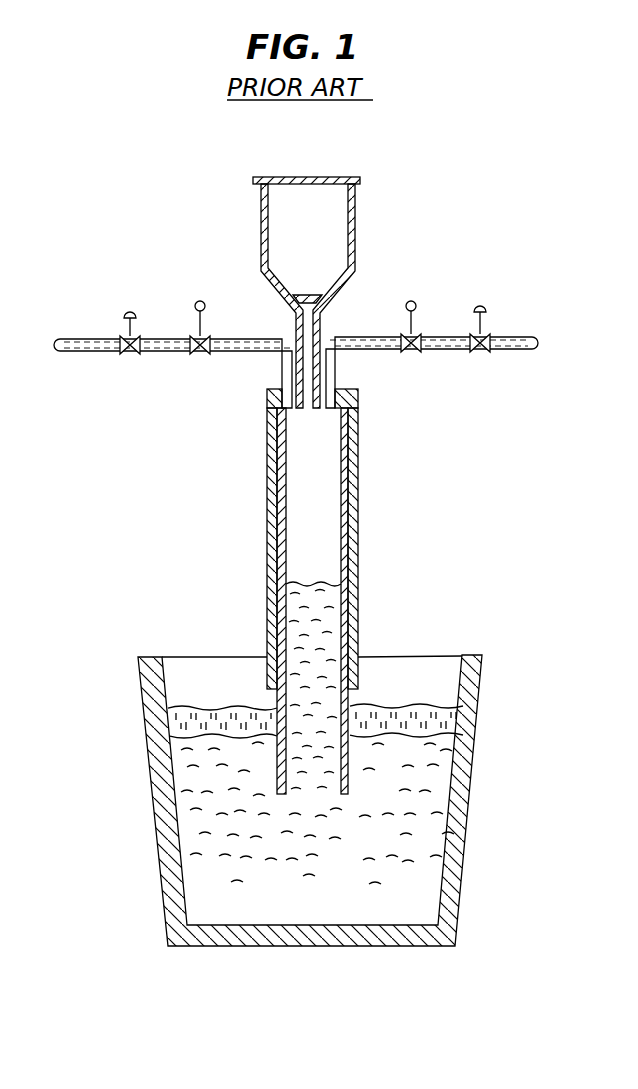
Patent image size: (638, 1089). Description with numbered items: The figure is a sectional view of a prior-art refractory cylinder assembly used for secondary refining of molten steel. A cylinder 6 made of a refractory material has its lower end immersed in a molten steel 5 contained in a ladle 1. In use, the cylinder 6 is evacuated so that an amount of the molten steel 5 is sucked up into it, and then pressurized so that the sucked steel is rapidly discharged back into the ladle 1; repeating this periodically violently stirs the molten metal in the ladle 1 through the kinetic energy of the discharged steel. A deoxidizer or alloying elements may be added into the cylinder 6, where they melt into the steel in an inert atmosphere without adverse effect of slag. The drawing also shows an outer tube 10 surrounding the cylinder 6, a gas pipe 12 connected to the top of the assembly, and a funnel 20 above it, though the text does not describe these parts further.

The ladle 1 is at (474, 769).
The molten steel 5 is at (422, 876).
The cylinder 6 is at (349, 562).
The outer refractory tube 10 is at (357, 509).
The gas supply pipe 12 is at (252, 352).
The funnel 20 is at (354, 212).